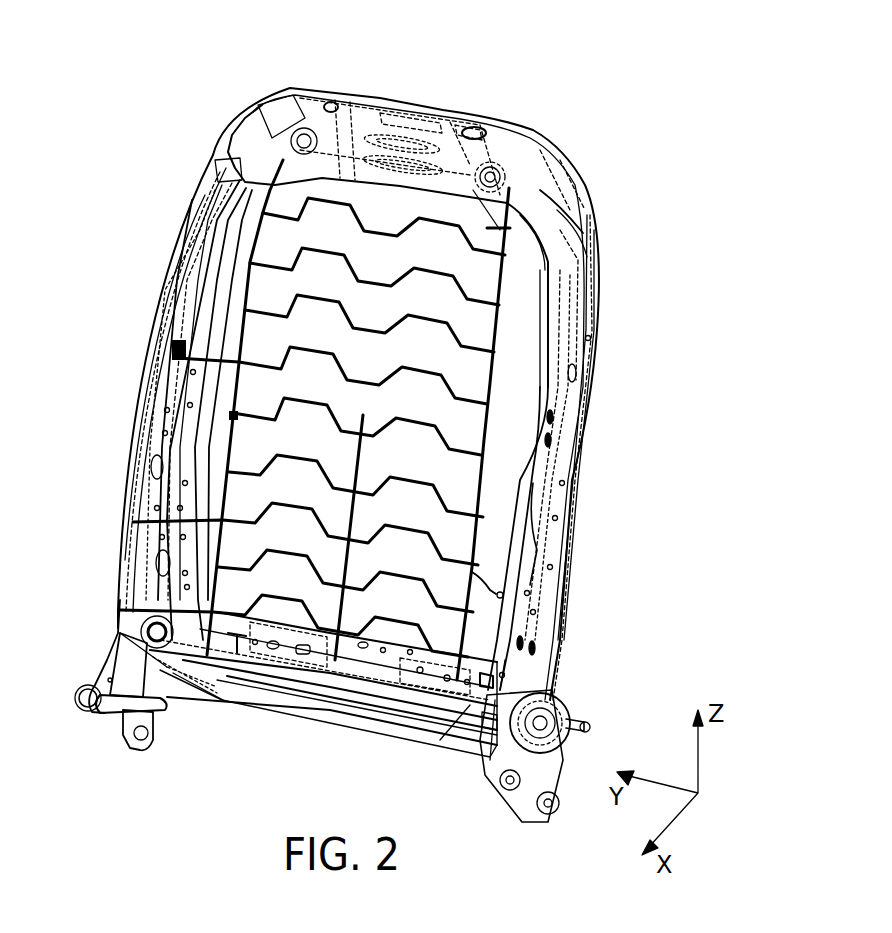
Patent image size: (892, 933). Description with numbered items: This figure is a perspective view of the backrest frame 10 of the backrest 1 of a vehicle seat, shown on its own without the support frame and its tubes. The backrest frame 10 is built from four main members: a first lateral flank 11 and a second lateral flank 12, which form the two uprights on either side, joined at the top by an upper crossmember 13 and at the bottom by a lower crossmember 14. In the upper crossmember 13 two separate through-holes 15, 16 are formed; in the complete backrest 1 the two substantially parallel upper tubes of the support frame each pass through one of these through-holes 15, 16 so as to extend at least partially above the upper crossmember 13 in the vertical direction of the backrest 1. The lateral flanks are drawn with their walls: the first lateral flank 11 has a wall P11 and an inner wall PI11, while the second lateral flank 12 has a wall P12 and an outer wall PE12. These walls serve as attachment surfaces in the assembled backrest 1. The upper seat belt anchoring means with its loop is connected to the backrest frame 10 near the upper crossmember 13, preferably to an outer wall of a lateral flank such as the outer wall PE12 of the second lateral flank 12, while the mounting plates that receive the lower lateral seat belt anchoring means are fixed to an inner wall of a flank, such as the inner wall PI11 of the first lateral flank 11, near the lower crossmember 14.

The backrest 1 is at (588, 133).
The backrest frame 10 is at (153, 297).
The first lateral flank 11 is at (117, 443).
The second lateral flank 12 is at (570, 498).
The upper crossmember 13 is at (542, 118).
The lower crossmember 14 is at (317, 705).
The through-hole 15 is at (335, 105).
The through-hole 16 is at (478, 130).
The wall of the first lateral flank P11 is at (147, 373).
The inner wall of the first lateral flank PI11 is at (148, 537).
The wall of the second lateral flank P12 is at (570, 451).
The outer wall of the second lateral flank PE12 is at (578, 360).